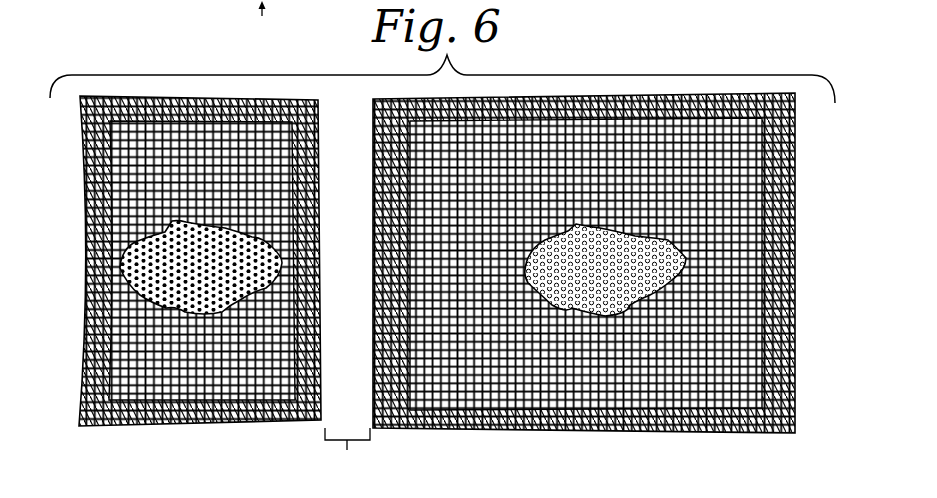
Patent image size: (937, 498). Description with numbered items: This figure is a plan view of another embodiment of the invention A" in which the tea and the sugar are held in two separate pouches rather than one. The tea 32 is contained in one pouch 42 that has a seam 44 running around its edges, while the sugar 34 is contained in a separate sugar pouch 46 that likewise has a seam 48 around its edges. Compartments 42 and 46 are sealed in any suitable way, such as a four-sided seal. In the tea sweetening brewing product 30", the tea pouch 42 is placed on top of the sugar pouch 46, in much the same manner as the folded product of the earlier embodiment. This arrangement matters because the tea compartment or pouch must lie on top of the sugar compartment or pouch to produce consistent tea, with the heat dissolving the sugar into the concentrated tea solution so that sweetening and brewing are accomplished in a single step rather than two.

The tea pouch 42 is at (83, 146).
The seam 44 is at (83, 375).
The tea 32 is at (153, 264).
The sugar 34 is at (628, 258).
The seam 48 is at (788, 234).
The sugar pouch 46 is at (796, 400).
The tea sweetening brewing product 30 is at (349, 456).
The embodiment of the invention A is at (529, 86).